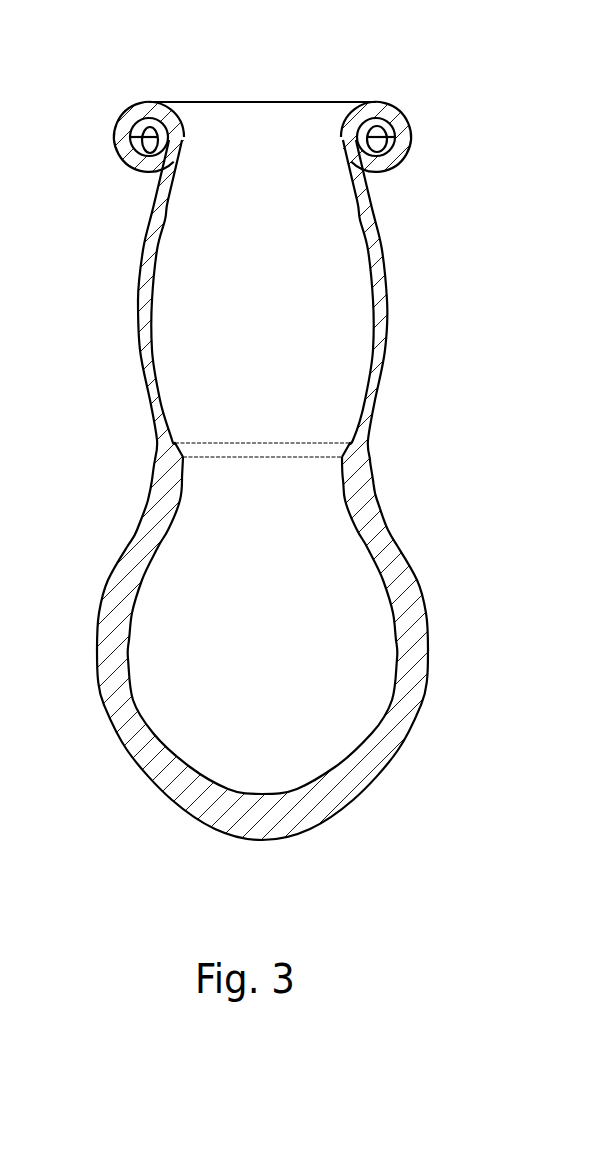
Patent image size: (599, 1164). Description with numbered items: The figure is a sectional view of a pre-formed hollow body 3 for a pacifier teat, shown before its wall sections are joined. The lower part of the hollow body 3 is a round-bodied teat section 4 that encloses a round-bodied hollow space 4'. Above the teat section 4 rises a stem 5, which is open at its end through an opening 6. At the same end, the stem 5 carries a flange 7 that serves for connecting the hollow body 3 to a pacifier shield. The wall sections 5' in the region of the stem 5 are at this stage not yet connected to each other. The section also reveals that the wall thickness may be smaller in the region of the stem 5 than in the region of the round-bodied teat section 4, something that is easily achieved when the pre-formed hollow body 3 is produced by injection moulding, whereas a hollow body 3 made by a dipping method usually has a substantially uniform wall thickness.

The pre-formed hollow body 3 is at (428, 752).
The teat section 4 is at (241, 641).
The round-bodied hollow space 4' is at (314, 625).
The stem 5 is at (325, 281).
The wall sections 5' is at (206, 298).
The opening 6 is at (267, 122).
The flange 7 is at (372, 130).